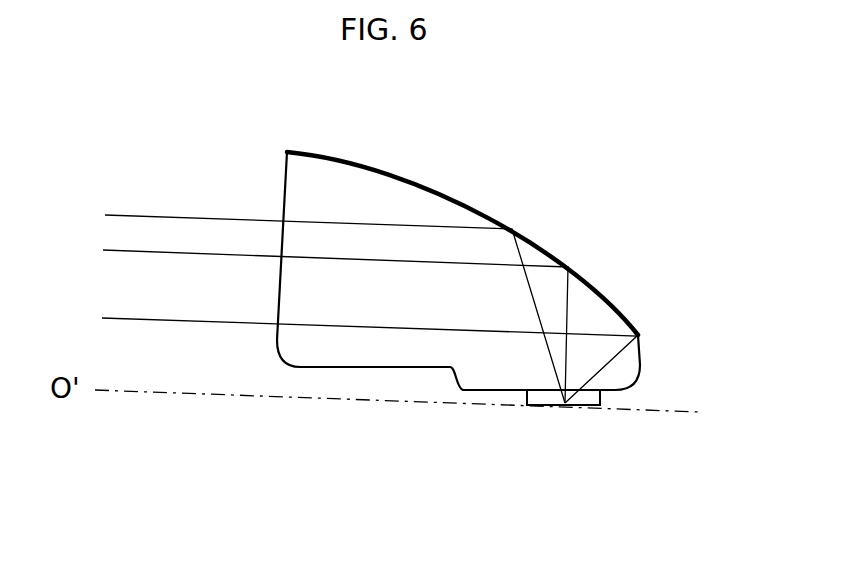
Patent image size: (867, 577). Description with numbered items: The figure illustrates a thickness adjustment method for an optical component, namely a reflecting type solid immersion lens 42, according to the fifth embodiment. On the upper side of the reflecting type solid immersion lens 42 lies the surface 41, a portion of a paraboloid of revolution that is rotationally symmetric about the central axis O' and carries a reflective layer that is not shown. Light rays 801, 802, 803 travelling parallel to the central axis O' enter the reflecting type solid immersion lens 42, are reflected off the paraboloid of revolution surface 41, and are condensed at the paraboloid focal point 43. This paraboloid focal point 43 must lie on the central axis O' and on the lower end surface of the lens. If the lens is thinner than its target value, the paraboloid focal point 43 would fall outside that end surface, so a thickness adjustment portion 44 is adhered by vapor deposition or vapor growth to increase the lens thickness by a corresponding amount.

The paraboloid of revolution surface 41 is at (500, 219).
The reflecting type solid immersion lens 42 is at (393, 202).
The paraboloid focal point 43 is at (565, 405).
The thickness adjustment portion 44 is at (542, 400).
The light ray 801 is at (310, 302).
The light ray 802 is at (310, 319).
The light ray 803 is at (345, 353).